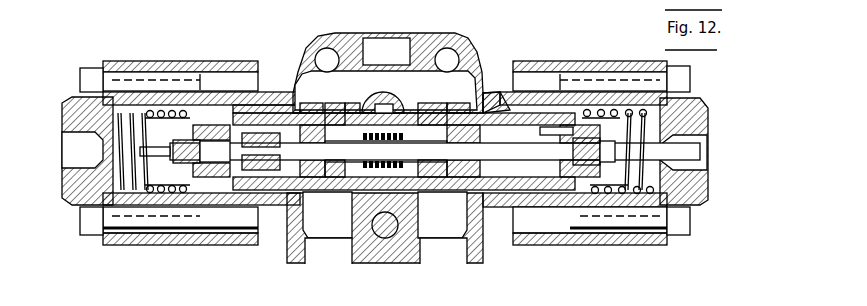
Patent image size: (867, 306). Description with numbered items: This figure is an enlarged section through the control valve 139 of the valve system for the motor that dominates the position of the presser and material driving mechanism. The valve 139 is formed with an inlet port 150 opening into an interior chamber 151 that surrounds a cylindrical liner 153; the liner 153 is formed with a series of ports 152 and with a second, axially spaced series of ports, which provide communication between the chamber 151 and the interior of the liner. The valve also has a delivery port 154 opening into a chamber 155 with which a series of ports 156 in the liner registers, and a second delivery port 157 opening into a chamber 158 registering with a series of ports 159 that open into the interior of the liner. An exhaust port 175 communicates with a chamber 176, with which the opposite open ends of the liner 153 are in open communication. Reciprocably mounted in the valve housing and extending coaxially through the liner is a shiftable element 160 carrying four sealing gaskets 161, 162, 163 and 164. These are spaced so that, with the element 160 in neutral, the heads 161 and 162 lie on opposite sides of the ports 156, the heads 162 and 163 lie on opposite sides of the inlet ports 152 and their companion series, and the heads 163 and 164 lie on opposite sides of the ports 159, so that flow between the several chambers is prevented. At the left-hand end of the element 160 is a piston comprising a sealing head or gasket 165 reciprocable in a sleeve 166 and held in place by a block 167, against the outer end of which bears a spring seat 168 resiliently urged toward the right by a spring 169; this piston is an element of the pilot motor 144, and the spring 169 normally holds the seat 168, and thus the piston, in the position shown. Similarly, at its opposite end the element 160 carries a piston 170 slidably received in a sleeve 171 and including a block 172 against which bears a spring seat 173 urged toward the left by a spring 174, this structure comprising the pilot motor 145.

The valve 139 is at (522, 47).
The pilot motor 144 is at (152, 250).
The pilot motor 145 is at (630, 248).
The inlet port 150 is at (387, 232).
The interior chamber 151 is at (394, 110).
The ports 152 is at (380, 100).
The cylindrical liner 153 is at (476, 95).
The delivery port 154 is at (327, 253).
The chamber 155 is at (355, 140).
The ports 156 is at (348, 180).
The second delivery port 157 is at (445, 253).
The chamber 158 is at (432, 114).
The ports 159 is at (418, 183).
The shiftable element 160 is at (362, 95).
The sealing gasket 161 is at (326, 113).
The sealing gasket 162 is at (360, 217).
The sealing gasket 163 is at (417, 218).
The sealing gasket 164 is at (472, 248).
The sealing head or gasket 165 is at (246, 205).
The sleeve 166 is at (214, 190).
The block 167 is at (208, 125).
The spring seat 168 is at (176, 112).
The spring 169 is at (145, 112).
The piston 170 is at (535, 190).
The sleeve 171 is at (557, 190).
The block 172 is at (572, 172).
The spring seat 173 is at (585, 108).
The spring 174 is at (616, 110).
The exhaust port 175 is at (387, 48).
The chamber 176 is at (437, 62).